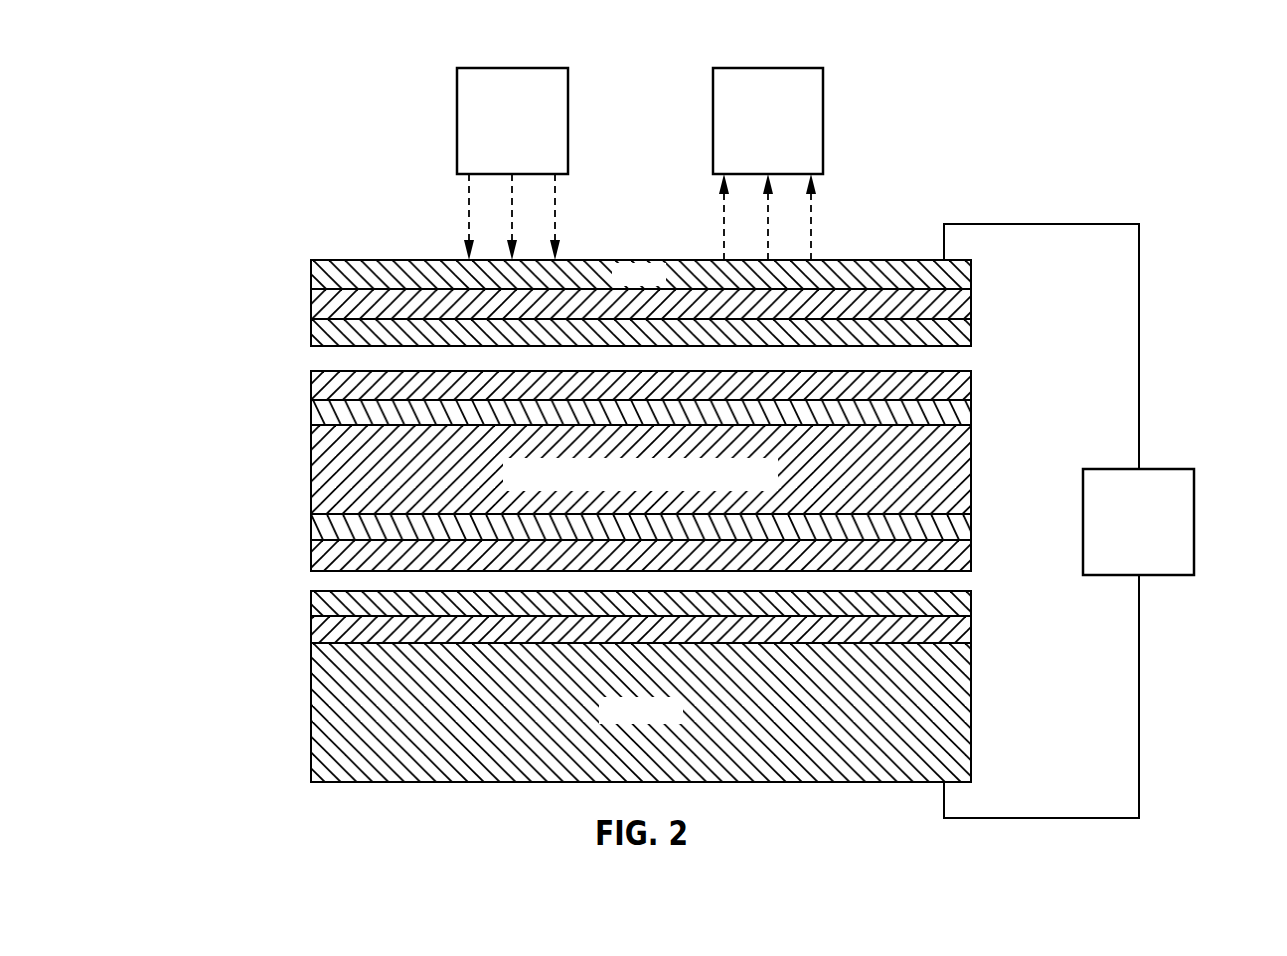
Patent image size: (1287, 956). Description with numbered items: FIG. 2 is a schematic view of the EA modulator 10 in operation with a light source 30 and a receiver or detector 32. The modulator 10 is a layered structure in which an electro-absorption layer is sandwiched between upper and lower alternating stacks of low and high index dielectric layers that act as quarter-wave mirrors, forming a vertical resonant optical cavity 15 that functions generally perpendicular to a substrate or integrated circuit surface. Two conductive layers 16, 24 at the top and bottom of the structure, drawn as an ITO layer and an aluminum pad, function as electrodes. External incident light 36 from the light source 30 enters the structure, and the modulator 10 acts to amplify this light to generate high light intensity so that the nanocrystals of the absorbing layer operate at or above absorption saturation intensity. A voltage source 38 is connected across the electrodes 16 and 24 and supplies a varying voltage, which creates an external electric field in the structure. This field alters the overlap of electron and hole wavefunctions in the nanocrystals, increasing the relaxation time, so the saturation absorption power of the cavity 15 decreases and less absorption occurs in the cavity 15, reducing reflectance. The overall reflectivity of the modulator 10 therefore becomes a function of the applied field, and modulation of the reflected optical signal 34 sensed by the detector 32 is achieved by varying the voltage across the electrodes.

The EA modulator 10 is at (226, 191).
The vertical resonant optical cavity 15 is at (991, 289).
The conductive layer 16 is at (311, 277).
The conductive layer 24 is at (312, 710).
The light source 30 is at (490, 68).
The detector 32 is at (803, 68).
The reflected optical signal 34 is at (812, 230).
The external incident light 36 is at (468, 203).
The voltage source 38 is at (1196, 511).